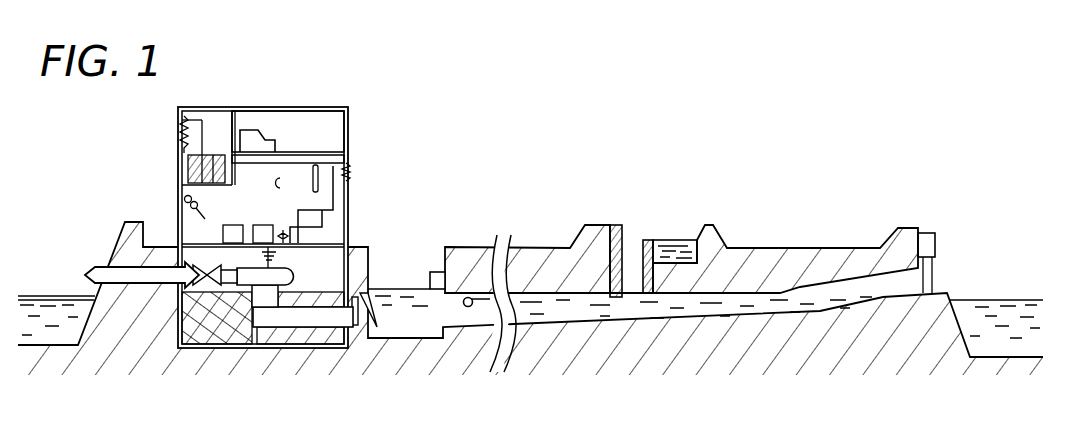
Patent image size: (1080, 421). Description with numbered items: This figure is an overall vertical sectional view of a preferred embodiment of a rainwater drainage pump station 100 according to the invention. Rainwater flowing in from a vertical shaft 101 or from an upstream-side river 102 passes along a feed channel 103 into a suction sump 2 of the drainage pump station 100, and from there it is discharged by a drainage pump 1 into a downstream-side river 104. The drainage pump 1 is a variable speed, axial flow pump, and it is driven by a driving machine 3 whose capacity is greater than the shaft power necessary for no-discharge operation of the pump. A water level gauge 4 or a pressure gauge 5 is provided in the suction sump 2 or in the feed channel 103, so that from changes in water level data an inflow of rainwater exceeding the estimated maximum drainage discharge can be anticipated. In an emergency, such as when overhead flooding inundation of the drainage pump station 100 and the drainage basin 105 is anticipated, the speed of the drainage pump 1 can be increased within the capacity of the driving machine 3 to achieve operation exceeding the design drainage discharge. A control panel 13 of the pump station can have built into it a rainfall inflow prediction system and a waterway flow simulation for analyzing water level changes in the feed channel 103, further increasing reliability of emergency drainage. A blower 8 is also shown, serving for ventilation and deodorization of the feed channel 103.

The drainage pump 1 is at (258, 292).
The suction sump 2 is at (410, 323).
The driving machine 3 is at (315, 237).
The water level gauge 4 is at (432, 272).
The pressure gauge 5 is at (470, 298).
The blower 8 is at (190, 196).
The control panel 13 is at (250, 133).
The drainage pump station 100 is at (247, 242).
The vertical shaft 101 is at (631, 252).
The upstream-side river 102 is at (993, 313).
The feed channel 103 is at (562, 310).
The downstream-side river 104 is at (43, 305).
The drainage basin 105 is at (833, 247).